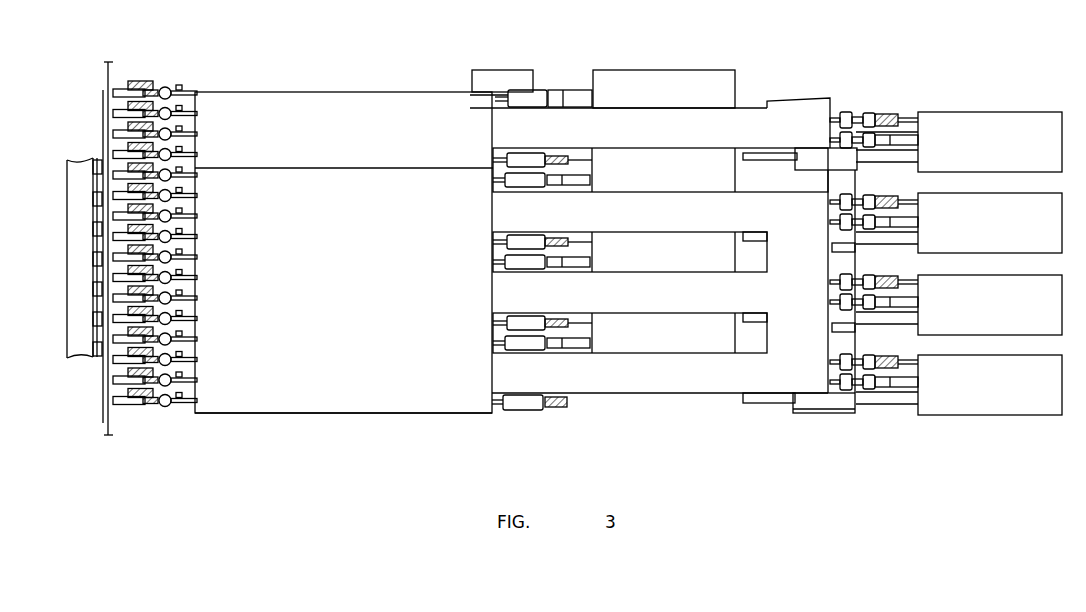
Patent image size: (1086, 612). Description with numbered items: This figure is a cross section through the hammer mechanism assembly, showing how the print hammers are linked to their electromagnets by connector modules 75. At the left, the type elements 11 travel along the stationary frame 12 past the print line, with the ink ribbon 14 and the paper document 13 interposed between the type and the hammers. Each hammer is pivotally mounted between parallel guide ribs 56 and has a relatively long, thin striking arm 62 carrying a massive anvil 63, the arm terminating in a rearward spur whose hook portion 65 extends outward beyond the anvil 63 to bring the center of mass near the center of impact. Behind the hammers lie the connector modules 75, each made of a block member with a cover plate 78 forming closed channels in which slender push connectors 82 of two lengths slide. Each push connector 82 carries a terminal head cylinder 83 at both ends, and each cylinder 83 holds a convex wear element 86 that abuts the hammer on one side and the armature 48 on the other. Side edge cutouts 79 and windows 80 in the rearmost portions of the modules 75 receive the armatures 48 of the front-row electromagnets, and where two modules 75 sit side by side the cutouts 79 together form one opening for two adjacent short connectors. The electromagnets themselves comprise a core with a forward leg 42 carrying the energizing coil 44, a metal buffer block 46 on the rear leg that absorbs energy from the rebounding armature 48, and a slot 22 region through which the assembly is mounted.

The type elements 11 is at (95, 172).
The stationary frame 12 is at (67, 243).
The paper document 13 is at (108, 63).
The ink ribbon 14 is at (104, 102).
The mounting slot 22 is at (766, 238).
The forward core leg 42 is at (779, 404).
The energizing coil 44 is at (855, 248).
The metal buffer block 46 is at (975, 118).
The armature 48 is at (556, 340).
The guide ribs 56 is at (144, 82).
The striking arm 62 is at (160, 90).
The anvil 63 is at (117, 88).
The hook portion 65 is at (181, 86).
The connector module 75 is at (328, 86).
The cover plate 78 is at (404, 413).
The side edge cutouts 79 is at (656, 180).
The windows 80 is at (686, 243).
The push connector 82 is at (498, 100).
The terminal head cylinder 83 is at (193, 88).
The wear element 86 is at (878, 112).